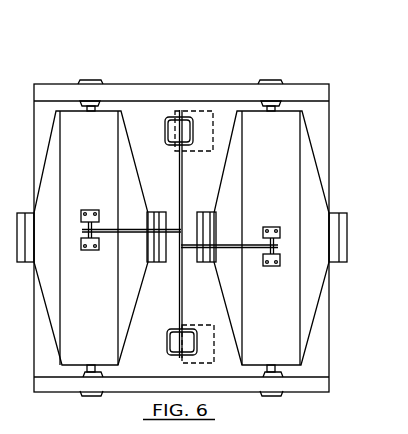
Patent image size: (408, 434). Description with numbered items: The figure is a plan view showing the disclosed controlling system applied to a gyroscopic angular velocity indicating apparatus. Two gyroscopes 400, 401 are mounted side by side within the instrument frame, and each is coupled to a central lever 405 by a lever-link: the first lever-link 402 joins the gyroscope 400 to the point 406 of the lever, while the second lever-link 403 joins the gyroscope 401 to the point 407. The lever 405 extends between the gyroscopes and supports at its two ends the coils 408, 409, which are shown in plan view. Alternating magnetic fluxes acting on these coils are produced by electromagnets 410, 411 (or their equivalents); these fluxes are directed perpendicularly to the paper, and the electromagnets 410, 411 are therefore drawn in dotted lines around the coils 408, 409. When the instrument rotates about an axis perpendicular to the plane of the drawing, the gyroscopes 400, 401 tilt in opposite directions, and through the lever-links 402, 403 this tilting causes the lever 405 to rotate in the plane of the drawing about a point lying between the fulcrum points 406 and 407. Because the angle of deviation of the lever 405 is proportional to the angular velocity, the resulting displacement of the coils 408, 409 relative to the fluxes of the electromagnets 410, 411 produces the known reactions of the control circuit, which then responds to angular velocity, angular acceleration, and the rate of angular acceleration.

The gyroscope 400 is at (91, 238).
The gyroscope 401 is at (271, 238).
The lever-link 402 is at (122, 240).
The lever-link 403 is at (246, 249).
The lever 405 is at (182, 175).
The fulcrum point 406 is at (182, 229).
The fulcrum point 407 is at (165, 247).
The coil 408 is at (166, 116).
The coil 409 is at (167, 341).
The electromagnet 410 is at (211, 110).
The electromagnet 411 is at (214, 350).